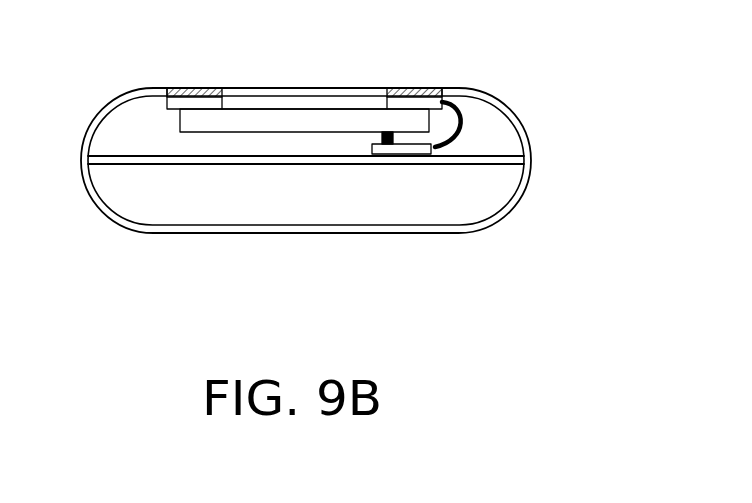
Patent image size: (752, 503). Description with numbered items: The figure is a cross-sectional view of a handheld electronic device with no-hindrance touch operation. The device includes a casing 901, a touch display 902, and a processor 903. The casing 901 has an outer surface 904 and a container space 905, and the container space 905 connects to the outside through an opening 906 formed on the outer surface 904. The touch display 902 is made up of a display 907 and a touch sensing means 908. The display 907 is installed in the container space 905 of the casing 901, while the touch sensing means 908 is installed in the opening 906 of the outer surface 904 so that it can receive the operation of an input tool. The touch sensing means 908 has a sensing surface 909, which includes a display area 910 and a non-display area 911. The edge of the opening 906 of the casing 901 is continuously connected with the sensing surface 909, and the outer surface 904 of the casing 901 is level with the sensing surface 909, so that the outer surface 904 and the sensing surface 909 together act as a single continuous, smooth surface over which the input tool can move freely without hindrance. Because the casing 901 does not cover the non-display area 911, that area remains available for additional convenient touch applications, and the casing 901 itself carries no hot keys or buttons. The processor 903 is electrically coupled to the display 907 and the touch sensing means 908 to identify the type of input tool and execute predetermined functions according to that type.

The casing 901 is at (513, 200).
The touch display 902 is at (157, 133).
The processor 903 is at (417, 148).
The outer surface 904 is at (492, 98).
The container space 905 is at (492, 133).
The opening 906 is at (443, 100).
The display 907 is at (303, 120).
The touch sensing means 908 is at (240, 100).
The sensing surface 909 is at (415, 88).
The display area 910 is at (262, 88).
The non-display area 911 is at (196, 88).